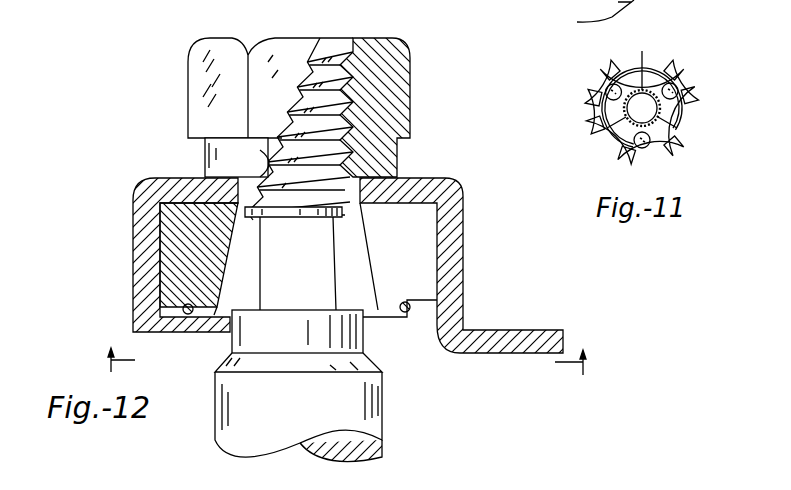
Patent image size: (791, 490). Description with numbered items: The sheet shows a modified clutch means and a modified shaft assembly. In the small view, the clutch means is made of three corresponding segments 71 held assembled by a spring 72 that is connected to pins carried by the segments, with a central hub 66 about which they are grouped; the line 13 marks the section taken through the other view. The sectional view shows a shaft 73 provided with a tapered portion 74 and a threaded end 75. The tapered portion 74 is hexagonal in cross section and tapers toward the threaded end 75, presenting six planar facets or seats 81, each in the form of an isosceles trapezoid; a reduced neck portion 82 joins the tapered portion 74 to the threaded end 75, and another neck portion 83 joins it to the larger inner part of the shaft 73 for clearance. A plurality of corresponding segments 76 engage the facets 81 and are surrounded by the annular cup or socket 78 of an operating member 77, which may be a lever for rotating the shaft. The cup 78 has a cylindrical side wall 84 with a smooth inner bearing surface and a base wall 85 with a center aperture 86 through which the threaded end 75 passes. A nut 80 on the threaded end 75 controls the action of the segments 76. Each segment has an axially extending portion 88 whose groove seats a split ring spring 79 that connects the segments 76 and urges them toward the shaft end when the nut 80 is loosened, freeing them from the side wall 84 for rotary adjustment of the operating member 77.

In FIG. 11, the hub 66 is at (658, 110).
In FIG. 11, the segments 71 is at (601, 71).
In FIG. 11, the spring 72 is at (688, 116).
In FIG. 12, the shaft 73 is at (387, 410).
In FIG. 12, the tapered portion 74 is at (283, 259).
In FIG. 12, the threaded end 75 is at (338, 48).
In FIG. 12, the segments 76 is at (337, 249).
In FIG. 12, the operating member 77 is at (541, 331).
In FIG. 12, the cup or socket 78 is at (467, 215).
In FIG. 12, the spring 79 is at (186, 315).
In FIG. 12, the nut 80 is at (416, 77).
In FIG. 12, the facets or seats 81 is at (295, 263).
In FIG. 12, the neck portion 82 is at (343, 218).
In FIG. 12, the neck portion 83 is at (284, 344).
In FIG. 12, the side wall 84 is at (465, 251).
In FIG. 12, the base wall 85 is at (428, 180).
In FIG. 12, the center aperture 86 is at (237, 157).
In FIG. 12, the axially extending portion 88 is at (205, 319).
In FIG. 12, the section line 13- 13 is at (346, 361).